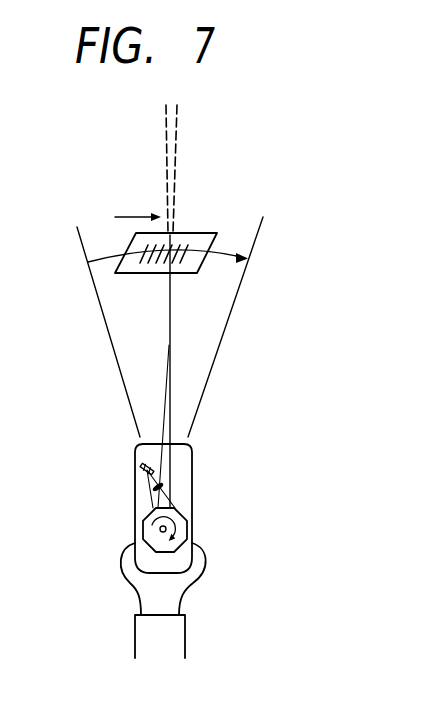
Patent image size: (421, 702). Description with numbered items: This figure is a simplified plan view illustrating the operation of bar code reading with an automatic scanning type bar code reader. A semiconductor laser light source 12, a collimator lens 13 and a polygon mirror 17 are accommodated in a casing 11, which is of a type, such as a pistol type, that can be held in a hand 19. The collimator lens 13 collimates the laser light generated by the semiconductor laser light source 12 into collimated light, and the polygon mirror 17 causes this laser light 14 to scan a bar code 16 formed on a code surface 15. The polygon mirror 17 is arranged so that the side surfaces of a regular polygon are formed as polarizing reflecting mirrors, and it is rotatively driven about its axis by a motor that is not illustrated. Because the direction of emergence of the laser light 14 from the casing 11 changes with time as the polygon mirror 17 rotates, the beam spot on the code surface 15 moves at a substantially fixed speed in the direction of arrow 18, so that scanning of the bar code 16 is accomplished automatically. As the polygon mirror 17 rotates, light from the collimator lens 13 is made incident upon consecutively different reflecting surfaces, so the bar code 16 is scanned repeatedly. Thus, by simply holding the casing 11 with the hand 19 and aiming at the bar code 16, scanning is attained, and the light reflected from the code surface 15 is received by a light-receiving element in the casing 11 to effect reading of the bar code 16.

The casing 11 is at (140, 510).
The semiconductor laser light source 12 is at (137, 471).
The collimator lens 13 is at (150, 489).
The laser light 14 is at (167, 418).
The code surface 15 is at (215, 233).
The bar code 16 is at (191, 228).
The polygon mirror 17 is at (195, 518).
The arrow 18 is at (135, 217).
The hand 19 is at (173, 633).